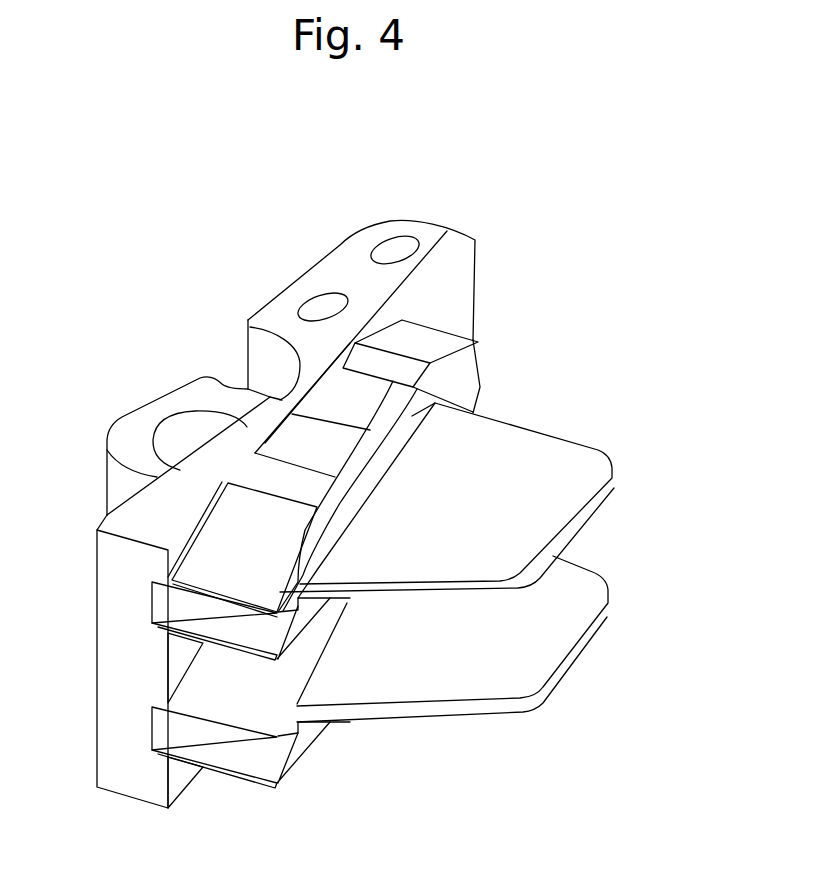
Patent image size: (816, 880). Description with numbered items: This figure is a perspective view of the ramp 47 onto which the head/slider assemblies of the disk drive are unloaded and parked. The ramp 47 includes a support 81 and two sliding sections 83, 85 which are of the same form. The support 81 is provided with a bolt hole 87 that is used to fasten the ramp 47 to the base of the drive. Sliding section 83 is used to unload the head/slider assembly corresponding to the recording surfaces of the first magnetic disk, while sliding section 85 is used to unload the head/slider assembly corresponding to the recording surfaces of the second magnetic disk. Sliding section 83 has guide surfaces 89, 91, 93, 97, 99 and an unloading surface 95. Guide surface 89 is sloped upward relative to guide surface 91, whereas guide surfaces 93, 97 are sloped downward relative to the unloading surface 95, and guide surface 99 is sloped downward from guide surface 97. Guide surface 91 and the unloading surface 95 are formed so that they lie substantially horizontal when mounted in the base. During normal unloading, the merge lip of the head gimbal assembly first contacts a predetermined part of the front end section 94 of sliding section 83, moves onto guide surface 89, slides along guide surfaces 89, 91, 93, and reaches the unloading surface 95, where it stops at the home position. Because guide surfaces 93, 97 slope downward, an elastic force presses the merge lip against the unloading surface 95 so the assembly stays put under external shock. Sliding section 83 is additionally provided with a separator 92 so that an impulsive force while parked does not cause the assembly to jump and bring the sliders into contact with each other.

The ramp 47 is at (453, 192).
The support 81 is at (333, 270).
The sliding section 83 is at (510, 352).
The sliding section 85 is at (327, 757).
The bolt hole 87 is at (182, 433).
The guide surface 89 is at (288, 532).
The guide surface 91 is at (305, 483).
The separator 92 is at (565, 478).
The guide surface 93 is at (335, 445).
The front end section 94 is at (198, 592).
The unloading surface 95 is at (338, 400).
The guide surface 97 is at (433, 378).
The guide surface 99 is at (433, 340).